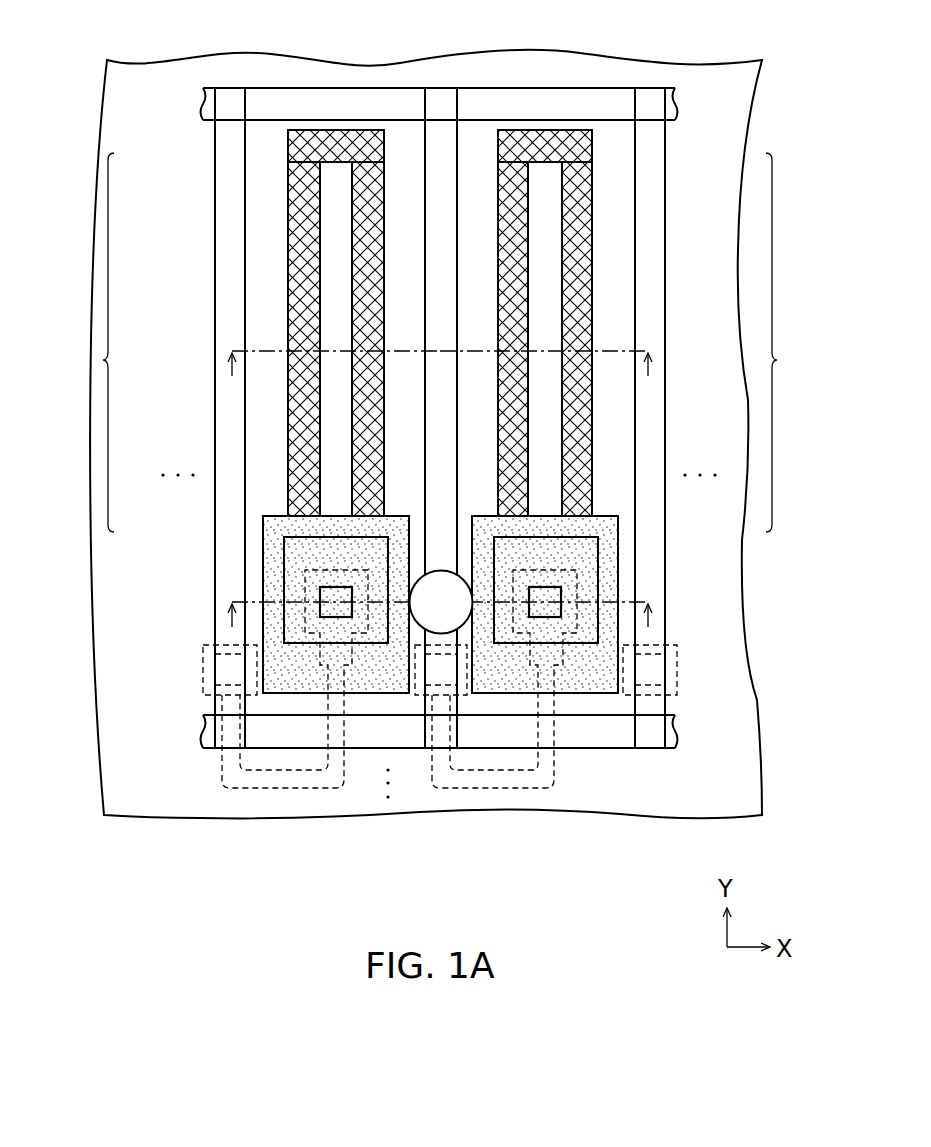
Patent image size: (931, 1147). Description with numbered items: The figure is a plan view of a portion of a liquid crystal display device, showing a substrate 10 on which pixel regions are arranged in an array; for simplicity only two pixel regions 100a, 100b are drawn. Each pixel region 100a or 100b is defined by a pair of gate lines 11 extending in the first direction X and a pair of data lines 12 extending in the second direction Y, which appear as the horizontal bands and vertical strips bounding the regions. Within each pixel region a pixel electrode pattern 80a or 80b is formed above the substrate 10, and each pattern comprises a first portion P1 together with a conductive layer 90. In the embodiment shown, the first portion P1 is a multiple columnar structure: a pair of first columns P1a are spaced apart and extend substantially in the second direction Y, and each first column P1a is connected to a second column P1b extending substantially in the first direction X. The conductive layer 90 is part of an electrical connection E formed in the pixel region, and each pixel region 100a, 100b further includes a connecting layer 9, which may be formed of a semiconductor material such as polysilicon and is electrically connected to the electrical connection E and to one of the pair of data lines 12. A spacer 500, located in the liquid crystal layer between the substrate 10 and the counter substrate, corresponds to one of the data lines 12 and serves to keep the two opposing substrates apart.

The substrate 10 is at (166, 110).
The gate line 11 is at (622, 100).
The data line 12 is at (238, 152).
The pixel region 100a is at (546, 80).
The pixel region 100b is at (338, 80).
The first portion P1 is at (442, 323).
The first column P1a is at (303, 208).
The second column P1b is at (292, 150).
The pixel electrode pattern 80a is at (796, 342).
The pixel electrode pattern 80b is at (84, 342).
The conductive layer 90 is at (270, 535).
The electrical connection E is at (622, 571).
The spacer 500 is at (427, 613).
The connecting layer 9 is at (282, 778).